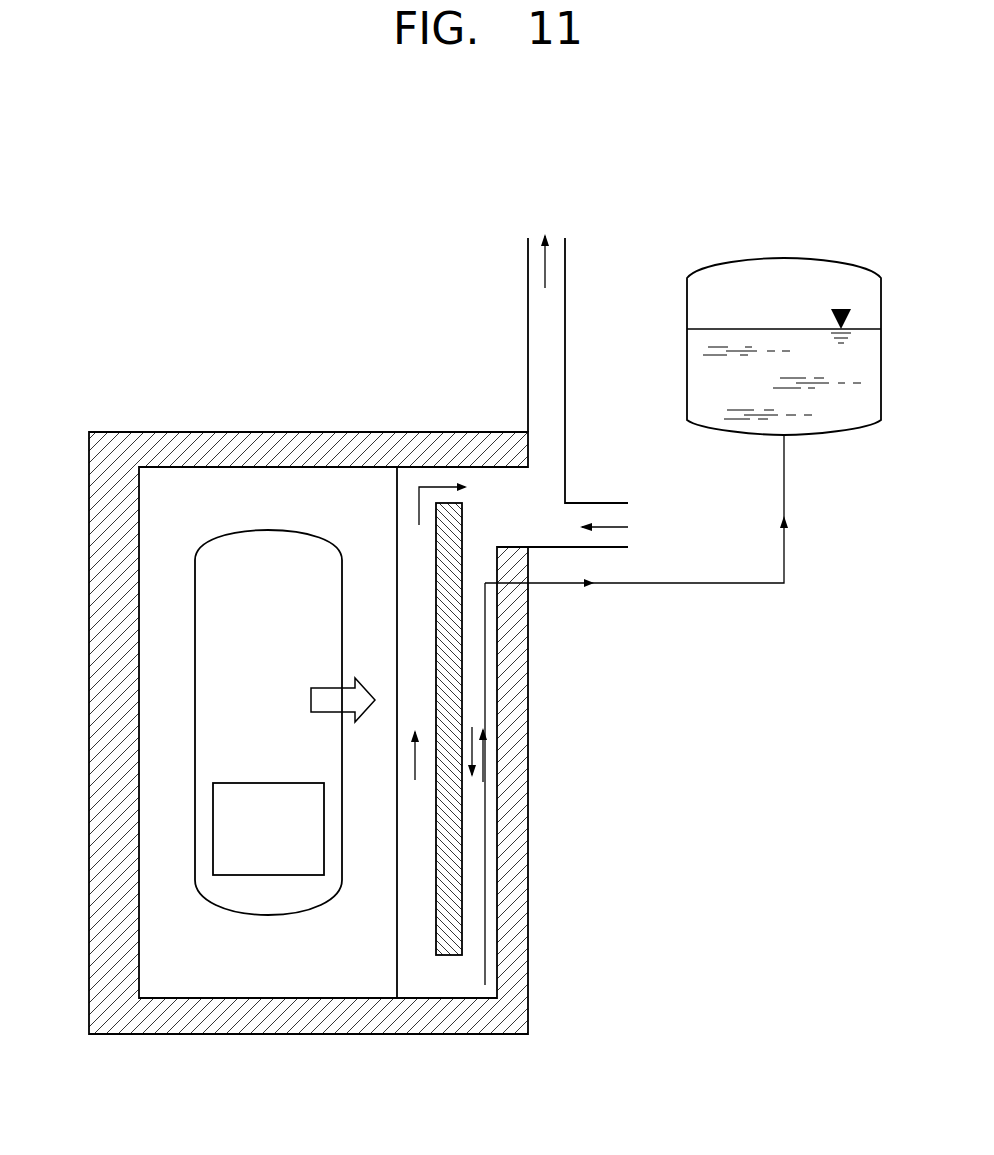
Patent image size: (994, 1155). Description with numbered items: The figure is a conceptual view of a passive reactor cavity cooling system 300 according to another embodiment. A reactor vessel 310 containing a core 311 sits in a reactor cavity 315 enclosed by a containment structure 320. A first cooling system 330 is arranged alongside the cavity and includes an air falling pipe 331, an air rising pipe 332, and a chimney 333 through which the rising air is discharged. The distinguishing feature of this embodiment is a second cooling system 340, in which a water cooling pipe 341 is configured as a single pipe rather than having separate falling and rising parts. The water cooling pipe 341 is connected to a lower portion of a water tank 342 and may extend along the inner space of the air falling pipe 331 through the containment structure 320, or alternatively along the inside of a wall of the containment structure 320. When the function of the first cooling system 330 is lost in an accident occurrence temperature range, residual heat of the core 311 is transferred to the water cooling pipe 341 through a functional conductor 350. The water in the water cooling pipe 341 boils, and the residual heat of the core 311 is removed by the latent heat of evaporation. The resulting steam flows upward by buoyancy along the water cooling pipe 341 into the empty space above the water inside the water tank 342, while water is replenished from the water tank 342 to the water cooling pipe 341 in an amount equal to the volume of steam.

The passive reactor cavity cooling system 300 is at (187, 292).
The reactor vessel 310 is at (200, 613).
The core 311 is at (215, 844).
The reactor cavity 315 is at (157, 929).
The containment structure 320 is at (95, 487).
The first cooling system 330 is at (462, 357).
The air falling pipe 331 is at (472, 618).
The air rising pipe 332 is at (407, 550).
The chimney 333 is at (535, 400).
The second cooling system 340 is at (703, 422).
The water cooling pipe 341 is at (877, 492).
The water tank 342 is at (810, 435).
The functional conductor 350 is at (449, 955).